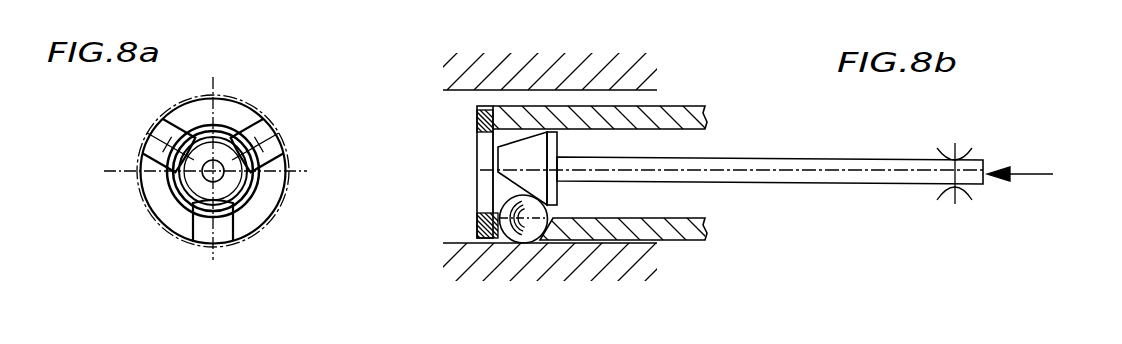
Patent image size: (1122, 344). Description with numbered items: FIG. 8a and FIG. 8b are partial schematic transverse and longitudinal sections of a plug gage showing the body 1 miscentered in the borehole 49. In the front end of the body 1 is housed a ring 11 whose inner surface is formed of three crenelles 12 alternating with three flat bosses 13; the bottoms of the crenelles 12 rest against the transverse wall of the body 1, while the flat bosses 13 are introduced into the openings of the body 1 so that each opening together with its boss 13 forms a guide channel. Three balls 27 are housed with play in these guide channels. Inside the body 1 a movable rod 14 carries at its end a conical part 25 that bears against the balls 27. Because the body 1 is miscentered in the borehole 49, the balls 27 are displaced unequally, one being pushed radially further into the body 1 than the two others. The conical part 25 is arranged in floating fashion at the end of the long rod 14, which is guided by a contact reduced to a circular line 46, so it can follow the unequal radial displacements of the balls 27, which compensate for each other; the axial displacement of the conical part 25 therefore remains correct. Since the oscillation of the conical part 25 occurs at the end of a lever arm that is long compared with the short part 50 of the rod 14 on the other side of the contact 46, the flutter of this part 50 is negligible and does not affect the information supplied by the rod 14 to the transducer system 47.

In FIG. 8a, the body 1 is at (248, 108).
In FIG. 8b, the body 1 is at (672, 118).
In FIG. 8a, the ring 11 is at (265, 210).
In FIG. 8b, the ring 11 is at (477, 147).
In FIG. 8b, the crenelles 12 is at (500, 147).
In FIG. 8b, the flat bosses 13 is at (476, 230).
In FIG. 8a, the movable rod 14 is at (193, 188).
In FIG. 8b, the movable rod 14 is at (765, 158).
In FIG. 8a, the conical part 25 is at (262, 181).
In FIG. 8b, the conical part 25 is at (538, 152).
In FIG. 8a, the balls 27 is at (157, 128).
In FIG. 8b, the balls 27 is at (533, 230).
In FIG. 8b, the contact reduced to a circular line 46 is at (965, 149).
In FIG. 8b, the transducer system 47 is at (1028, 173).
In FIG. 8a, the borehole 49 is at (240, 97).
In FIG. 8b, the borehole 49 is at (452, 92).
In FIG. 8b, the short part of the rod 50 is at (985, 186).